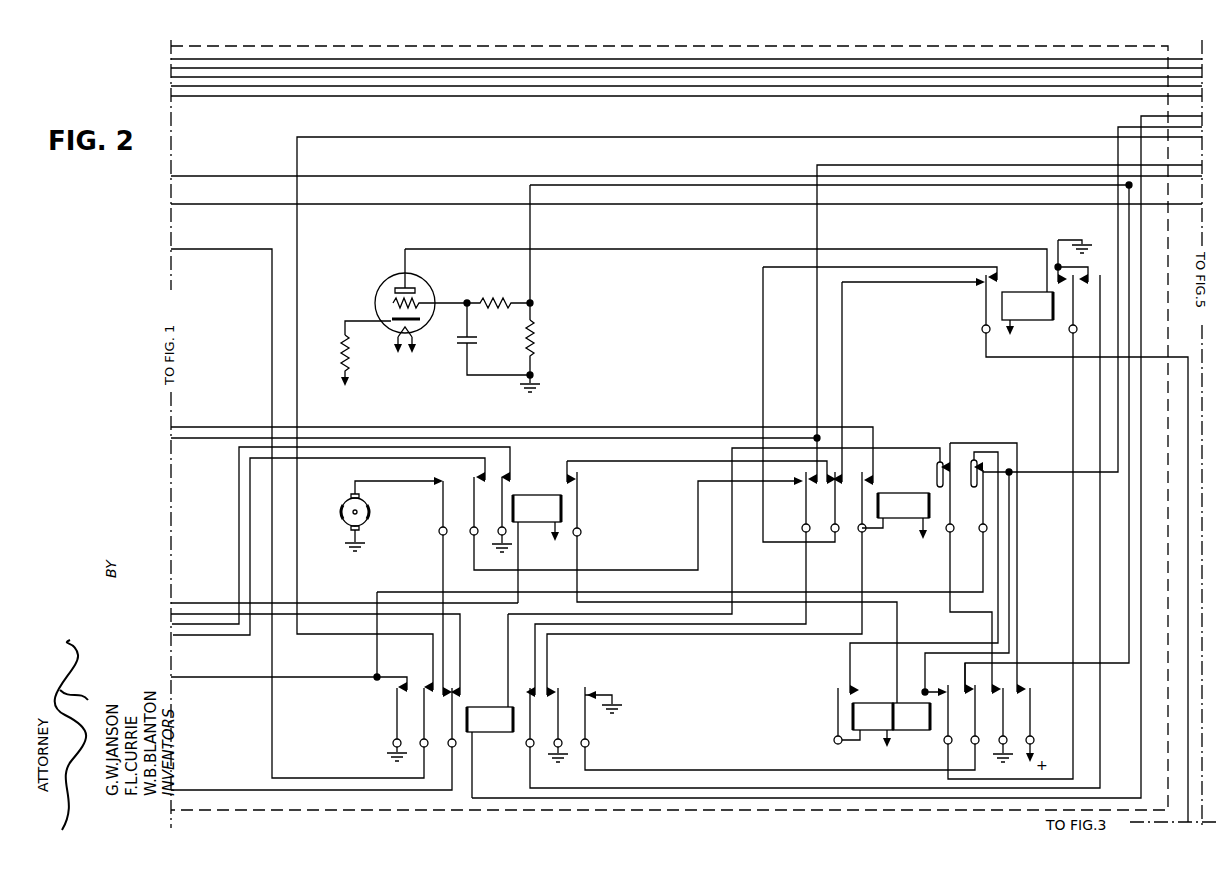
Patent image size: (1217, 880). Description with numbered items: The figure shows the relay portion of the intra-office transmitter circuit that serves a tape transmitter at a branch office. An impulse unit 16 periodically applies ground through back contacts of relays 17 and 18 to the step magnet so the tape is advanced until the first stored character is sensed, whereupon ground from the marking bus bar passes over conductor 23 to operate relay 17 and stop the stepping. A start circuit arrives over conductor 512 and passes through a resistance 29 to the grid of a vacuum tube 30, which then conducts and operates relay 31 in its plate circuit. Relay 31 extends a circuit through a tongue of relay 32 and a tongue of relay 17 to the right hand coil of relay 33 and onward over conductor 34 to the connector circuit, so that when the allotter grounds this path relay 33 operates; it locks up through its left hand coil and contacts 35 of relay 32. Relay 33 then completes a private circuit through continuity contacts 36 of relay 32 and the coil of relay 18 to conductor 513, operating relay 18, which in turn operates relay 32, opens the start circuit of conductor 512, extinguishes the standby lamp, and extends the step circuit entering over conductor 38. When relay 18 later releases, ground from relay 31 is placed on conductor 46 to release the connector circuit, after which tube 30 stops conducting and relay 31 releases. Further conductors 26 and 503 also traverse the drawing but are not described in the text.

The impulse unit 16 is at (369, 515).
The relay 17 is at (527, 496).
The relay 18 is at (490, 712).
The conductor 23 is at (188, 604).
The conductor 26 is at (190, 176).
The resistance 29 is at (503, 301).
The vacuum tube 30 is at (386, 296).
The relay 31 is at (1026, 315).
The relay 32 is at (904, 511).
The relay 33 is at (878, 712).
The conductor 34 is at (1118, 130).
The contacts 35 is at (977, 462).
The continuity contacts 36 is at (942, 462).
The conductor 38 is at (660, 138).
The conductor 46 is at (924, 166).
The conductor 503 is at (190, 207).
The conductor 512 is at (530, 268).
The conductor 513 is at (1140, 115).